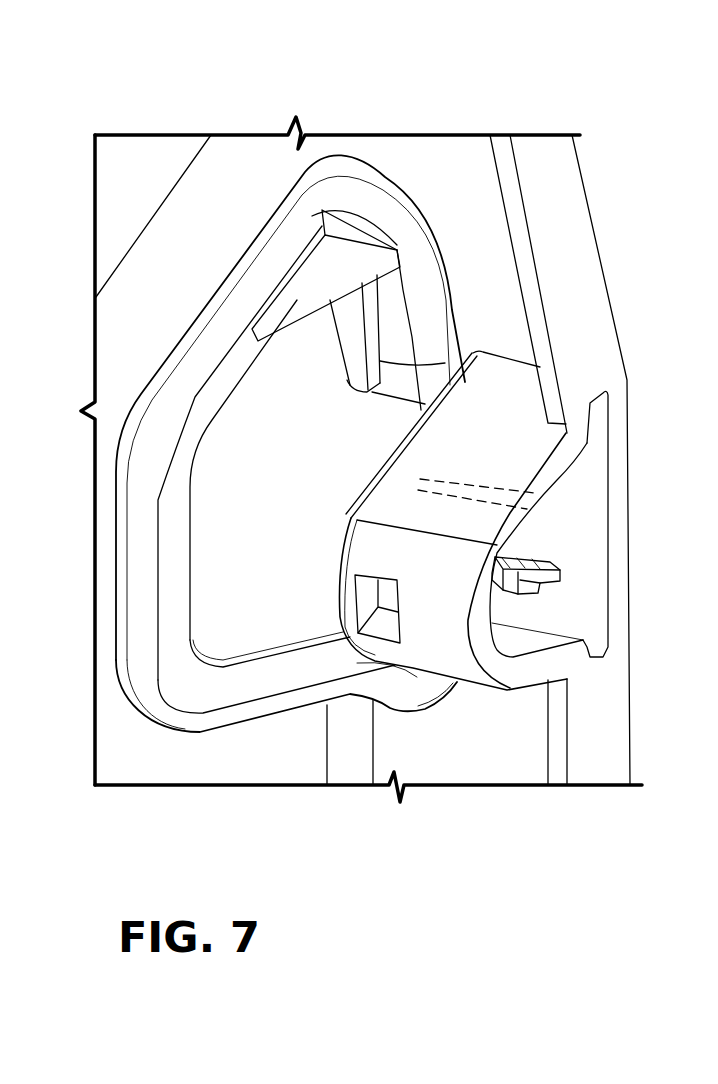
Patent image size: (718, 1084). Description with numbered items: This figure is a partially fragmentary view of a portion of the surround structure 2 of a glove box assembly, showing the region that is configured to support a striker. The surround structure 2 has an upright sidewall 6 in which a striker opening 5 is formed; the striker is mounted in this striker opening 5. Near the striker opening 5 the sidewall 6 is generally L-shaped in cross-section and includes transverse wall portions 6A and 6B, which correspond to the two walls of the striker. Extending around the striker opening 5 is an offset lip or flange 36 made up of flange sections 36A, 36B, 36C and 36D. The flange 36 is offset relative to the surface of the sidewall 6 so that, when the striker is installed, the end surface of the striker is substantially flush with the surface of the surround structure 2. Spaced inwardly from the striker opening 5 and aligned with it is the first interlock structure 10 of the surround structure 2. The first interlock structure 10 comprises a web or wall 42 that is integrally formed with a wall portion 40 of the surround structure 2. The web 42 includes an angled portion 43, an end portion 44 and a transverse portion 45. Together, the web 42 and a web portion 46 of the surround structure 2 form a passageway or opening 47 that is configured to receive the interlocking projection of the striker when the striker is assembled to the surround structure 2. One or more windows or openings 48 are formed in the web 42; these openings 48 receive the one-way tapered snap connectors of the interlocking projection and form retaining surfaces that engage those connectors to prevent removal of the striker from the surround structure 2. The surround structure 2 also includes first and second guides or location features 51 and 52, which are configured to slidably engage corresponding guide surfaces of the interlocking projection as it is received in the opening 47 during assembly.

The surround structure 2 is at (256, 163).
The striker opening 5 is at (220, 623).
The sidewall 6 is at (152, 280).
The transverse wall portion 6A is at (152, 330).
The transverse wall portion 6B is at (443, 170).
The first interlock structure 10 is at (480, 587).
The offset flange 36 is at (170, 565).
The flange section 36A is at (265, 677).
The flange section 36B is at (190, 488).
The flange section 36C is at (217, 398).
The flange section 36D is at (347, 347).
The wall portion 40 is at (480, 270).
The web 42 is at (503, 417).
The angled portion 43 is at (503, 481).
The end portion 44 is at (440, 640).
The transverse portion 45 is at (520, 672).
The web portion 46 is at (580, 583).
The passageway 47 is at (558, 539).
The window 48 is at (377, 625).
The first guide 51 is at (503, 587).
The second guide 52 is at (550, 505).